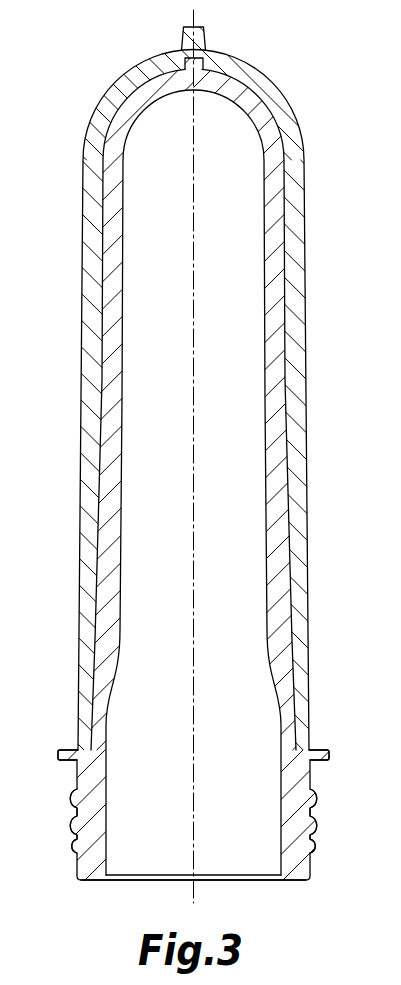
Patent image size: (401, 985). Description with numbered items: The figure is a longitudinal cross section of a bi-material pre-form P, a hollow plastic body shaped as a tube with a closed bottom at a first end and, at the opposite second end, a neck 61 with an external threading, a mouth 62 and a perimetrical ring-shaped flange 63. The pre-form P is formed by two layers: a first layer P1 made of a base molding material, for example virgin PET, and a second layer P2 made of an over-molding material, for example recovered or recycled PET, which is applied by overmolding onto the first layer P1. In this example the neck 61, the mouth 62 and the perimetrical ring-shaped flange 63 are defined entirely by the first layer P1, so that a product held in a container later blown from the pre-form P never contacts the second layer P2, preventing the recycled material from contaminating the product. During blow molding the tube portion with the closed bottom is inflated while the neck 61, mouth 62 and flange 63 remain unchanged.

The bi-material pre-form P is at (322, 236).
The first layer P1 is at (272, 383).
The second layer P2 is at (297, 323).
The neck 61 is at (313, 797).
The mouth 62 is at (135, 867).
The perimetrical ring-shaped flange 63 is at (63, 752).